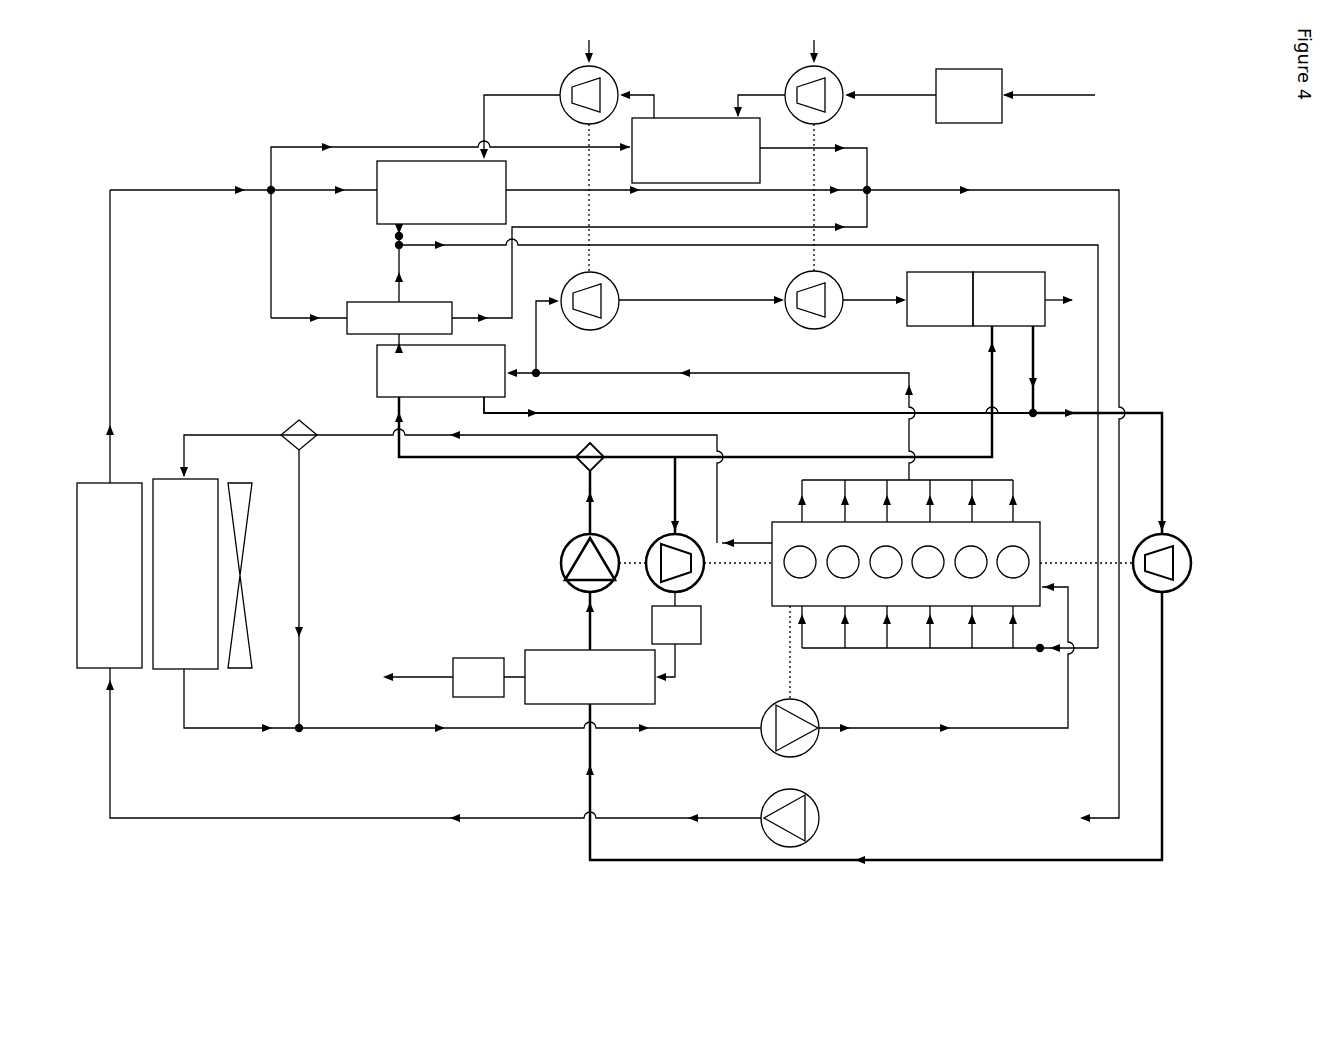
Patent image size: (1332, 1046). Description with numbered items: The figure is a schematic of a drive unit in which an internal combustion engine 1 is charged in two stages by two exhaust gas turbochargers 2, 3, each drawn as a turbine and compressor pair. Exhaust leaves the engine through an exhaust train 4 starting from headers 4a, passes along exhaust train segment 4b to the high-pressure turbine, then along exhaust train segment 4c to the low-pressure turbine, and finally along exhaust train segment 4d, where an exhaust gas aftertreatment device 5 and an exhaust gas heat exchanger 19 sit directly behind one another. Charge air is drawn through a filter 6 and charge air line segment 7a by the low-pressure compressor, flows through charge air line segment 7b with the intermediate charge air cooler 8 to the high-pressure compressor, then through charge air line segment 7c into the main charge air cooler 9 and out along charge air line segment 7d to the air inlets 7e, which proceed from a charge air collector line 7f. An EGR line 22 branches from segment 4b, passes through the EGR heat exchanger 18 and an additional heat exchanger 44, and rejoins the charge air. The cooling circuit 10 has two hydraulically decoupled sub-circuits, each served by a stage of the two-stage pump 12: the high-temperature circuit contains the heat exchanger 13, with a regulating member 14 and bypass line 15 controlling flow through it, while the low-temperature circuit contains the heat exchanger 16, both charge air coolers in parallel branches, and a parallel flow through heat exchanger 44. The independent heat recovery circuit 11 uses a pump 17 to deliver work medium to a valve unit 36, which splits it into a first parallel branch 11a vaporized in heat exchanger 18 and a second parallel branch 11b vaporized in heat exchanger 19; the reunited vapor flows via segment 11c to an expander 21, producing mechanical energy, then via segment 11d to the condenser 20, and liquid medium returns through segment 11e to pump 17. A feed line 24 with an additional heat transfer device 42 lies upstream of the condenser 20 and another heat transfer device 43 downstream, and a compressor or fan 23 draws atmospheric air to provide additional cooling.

The internal combustion engine 1 is at (1035, 540).
The exhaust gas turbocharger 2 is at (812, 37).
The exhaust gas turbocharger 3 is at (586, 37).
The exhaust train 4 is at (889, 355).
The headers 4a is at (800, 508).
The exhaust train segment 4b is at (727, 370).
The exhaust train segment 4c is at (697, 292).
The exhaust train segment 4d is at (877, 292).
The exhaust gas aftertreatment device 5 is at (940, 299).
The filter 6 is at (1015, 96).
The charge air line segment 7a is at (905, 92).
The charge air line segment 7b is at (735, 100).
The charge air line segment 7c is at (497, 79).
The charge air line segment 7d is at (633, 247).
The air inlets 7e is at (930, 630).
The charge air collector line 7f is at (858, 650).
The intermediate charge air cooler 8 is at (696, 150).
The main charge air cooler 9 is at (441, 192).
The cooling circuit 10 is at (427, 578).
The heat recovery circuit 11 is at (1190, 426).
The first parallel branch 11a is at (436, 483).
The second parallel branch 11b is at (700, 485).
The cooling circuit segment 11c is at (1163, 460).
The cooling circuit segment 11d is at (656, 862).
The cooling circuit segment 11e is at (585, 638).
The pump 12 is at (769, 684).
The heat exchanger 13 is at (202, 574).
The regulating member 14 is at (308, 445).
The bypass line 15 is at (300, 553).
The heat exchanger 16 is at (109, 575).
The pump 17 is at (604, 582).
The EGR heat exchanger 18 is at (441, 365).
The exhaust gas heat exchanger 19 is at (1023, 299).
The condenser 20 is at (590, 677).
The expander 21 is at (1176, 588).
The EGR line 22 is at (560, 397).
The compressor or fan 23 is at (696, 580).
The feed line 24 is at (683, 668).
The valve unit 36 is at (598, 468).
The heat transfer device 42 is at (676, 618).
The heat transfer device 43 is at (454, 677).
The heat exchanger 44 is at (399, 279).